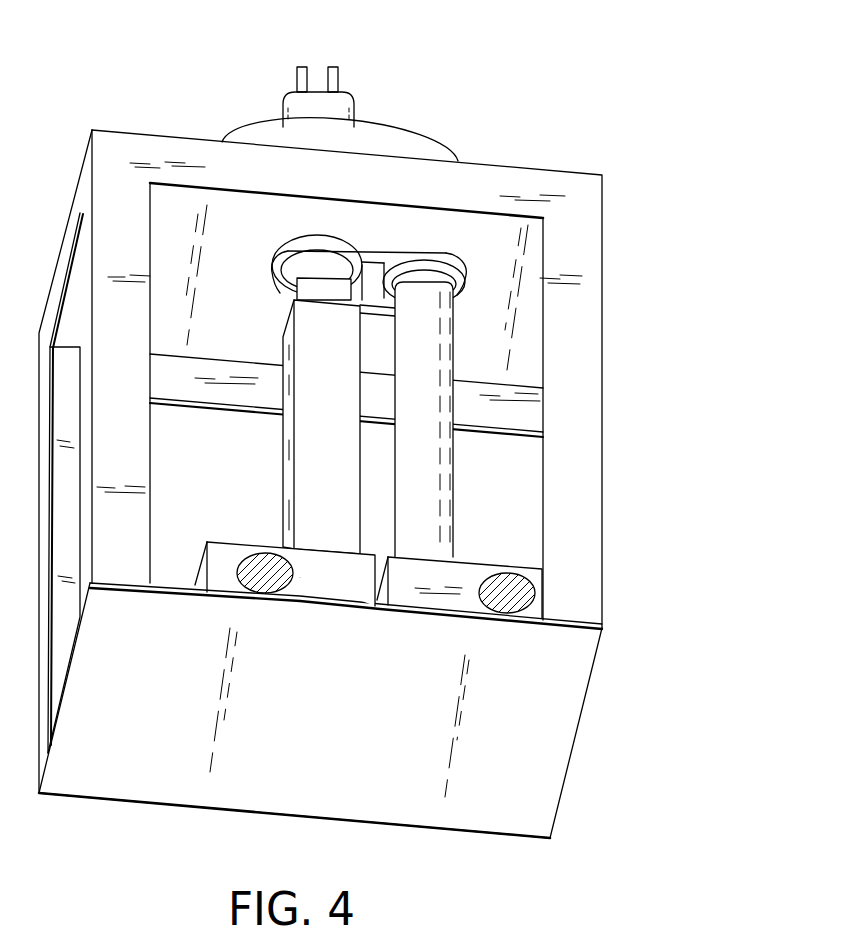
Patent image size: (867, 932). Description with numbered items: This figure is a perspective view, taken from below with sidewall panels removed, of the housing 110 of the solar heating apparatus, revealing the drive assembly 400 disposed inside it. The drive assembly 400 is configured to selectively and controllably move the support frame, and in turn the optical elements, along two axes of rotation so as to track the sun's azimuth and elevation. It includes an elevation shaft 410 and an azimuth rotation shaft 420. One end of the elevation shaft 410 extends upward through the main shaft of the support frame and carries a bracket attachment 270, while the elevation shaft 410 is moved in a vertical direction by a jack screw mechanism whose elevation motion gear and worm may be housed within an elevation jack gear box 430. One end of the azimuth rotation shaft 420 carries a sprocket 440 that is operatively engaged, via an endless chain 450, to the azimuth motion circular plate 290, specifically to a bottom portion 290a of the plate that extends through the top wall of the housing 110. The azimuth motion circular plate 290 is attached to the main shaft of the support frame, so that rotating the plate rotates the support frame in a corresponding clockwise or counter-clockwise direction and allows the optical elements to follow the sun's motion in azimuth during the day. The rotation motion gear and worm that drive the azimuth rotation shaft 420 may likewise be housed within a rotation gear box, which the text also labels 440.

The housing 110 is at (590, 208).
The bracket attachment 270 is at (372, 63).
The azimuth motion circular plate 290 is at (380, 140).
The bottom portion of the azimuth motion circular plate 290a is at (278, 247).
The drive assembly 400 is at (176, 448).
The elevation shaft 410 is at (262, 456).
The azimuth rotation shaft 420 is at (472, 484).
The elevation jack gear box 430 is at (335, 588).
The sprocket 440 is at (460, 293).
The endless chain 450 is at (387, 254).